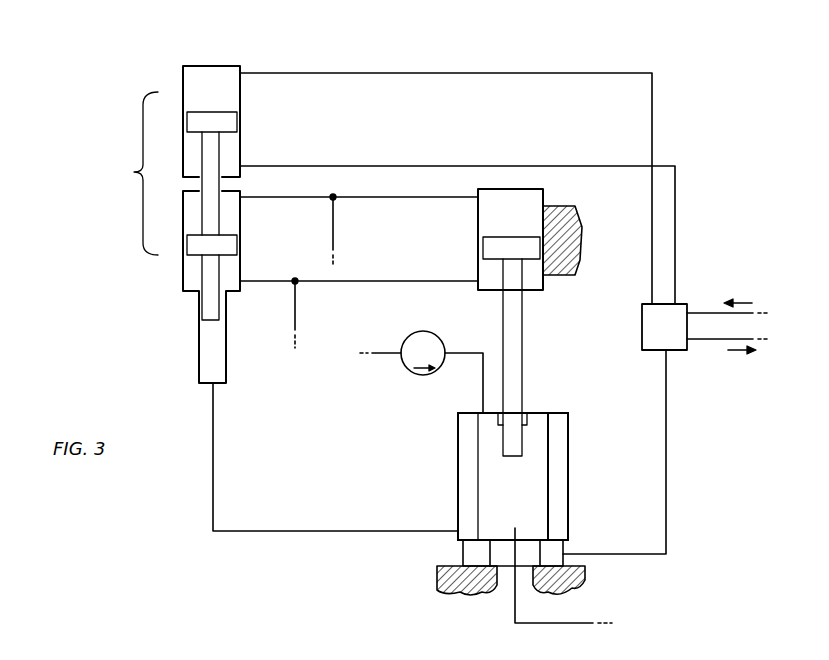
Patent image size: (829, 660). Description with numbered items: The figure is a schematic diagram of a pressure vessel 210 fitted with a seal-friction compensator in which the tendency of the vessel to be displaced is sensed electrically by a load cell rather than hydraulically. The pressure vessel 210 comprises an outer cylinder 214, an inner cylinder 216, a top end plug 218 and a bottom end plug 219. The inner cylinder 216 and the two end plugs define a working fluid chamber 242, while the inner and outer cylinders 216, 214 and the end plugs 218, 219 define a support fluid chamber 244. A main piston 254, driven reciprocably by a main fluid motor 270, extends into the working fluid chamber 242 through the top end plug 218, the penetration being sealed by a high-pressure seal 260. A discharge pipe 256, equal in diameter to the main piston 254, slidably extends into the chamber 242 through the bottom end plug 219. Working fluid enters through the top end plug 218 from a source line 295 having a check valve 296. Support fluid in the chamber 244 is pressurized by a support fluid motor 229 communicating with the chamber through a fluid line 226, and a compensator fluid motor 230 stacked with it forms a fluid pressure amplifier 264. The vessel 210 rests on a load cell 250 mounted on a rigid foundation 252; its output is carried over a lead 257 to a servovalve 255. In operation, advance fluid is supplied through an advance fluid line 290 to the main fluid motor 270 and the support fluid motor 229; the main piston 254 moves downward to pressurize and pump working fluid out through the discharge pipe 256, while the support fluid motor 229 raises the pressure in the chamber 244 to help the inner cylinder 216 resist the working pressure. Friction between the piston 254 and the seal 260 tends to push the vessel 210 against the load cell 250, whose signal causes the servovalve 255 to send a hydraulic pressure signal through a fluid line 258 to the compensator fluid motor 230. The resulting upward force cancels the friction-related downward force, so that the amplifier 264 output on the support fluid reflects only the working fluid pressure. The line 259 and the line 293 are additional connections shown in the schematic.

The pressure vessel 210 is at (484, 445).
The outer cylinder 214 is at (458, 455).
The inner cylinder 216 is at (478, 488).
The top end plug 218 is at (540, 412).
The bottom end plug 219 is at (535, 540).
The fluid line 226 is at (216, 490).
The support fluid motor 229 is at (185, 268).
The compensator fluid motor 230 is at (190, 90).
The working fluid chamber 242 is at (535, 495).
The support fluid chamber 244 is at (566, 445).
The load cell 250 is at (470, 556).
The rigid foundation 252 is at (462, 594).
The main piston 254 is at (505, 316).
The servovalve 255 is at (641, 318).
The discharge pipe 256 is at (592, 622).
The lead 257 is at (668, 444).
The fluid line 258 is at (677, 198).
The line 259 is at (650, 116).
The high-pressure seal 260 is at (527, 412).
The fluid pressure amplifier 264 is at (124, 173).
The main fluid motor 270 is at (546, 192).
The advance fluid line 290 is at (380, 200).
The line 293 is at (348, 284).
The source line 295 is at (478, 378).
The check valve 296 is at (410, 371).